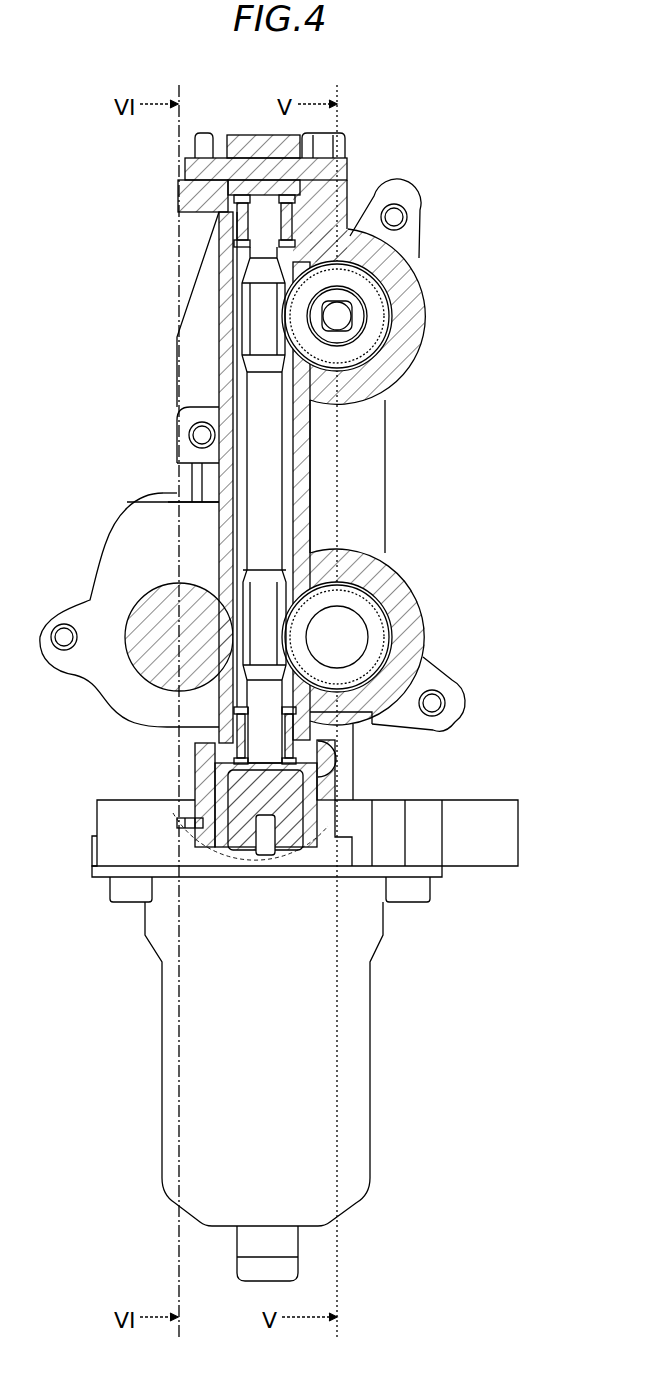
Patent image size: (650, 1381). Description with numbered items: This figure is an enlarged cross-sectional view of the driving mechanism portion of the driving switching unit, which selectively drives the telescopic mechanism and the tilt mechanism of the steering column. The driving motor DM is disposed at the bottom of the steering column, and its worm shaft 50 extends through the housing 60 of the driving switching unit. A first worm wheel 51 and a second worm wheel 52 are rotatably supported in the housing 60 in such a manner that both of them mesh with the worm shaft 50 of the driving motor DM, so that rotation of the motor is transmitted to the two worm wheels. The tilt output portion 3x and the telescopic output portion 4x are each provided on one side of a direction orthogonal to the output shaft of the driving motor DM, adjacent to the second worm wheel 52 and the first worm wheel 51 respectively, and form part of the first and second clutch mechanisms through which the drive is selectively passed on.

The worm shaft 50 is at (273, 480).
The first worm wheel 51 is at (370, 617).
The second worm wheel 52 is at (372, 308).
The housing 60 is at (277, 496).
The driving motor DM is at (167, 997).
The tilt output portion 3x is at (433, 343).
The telescopic output portion 4x is at (443, 637).